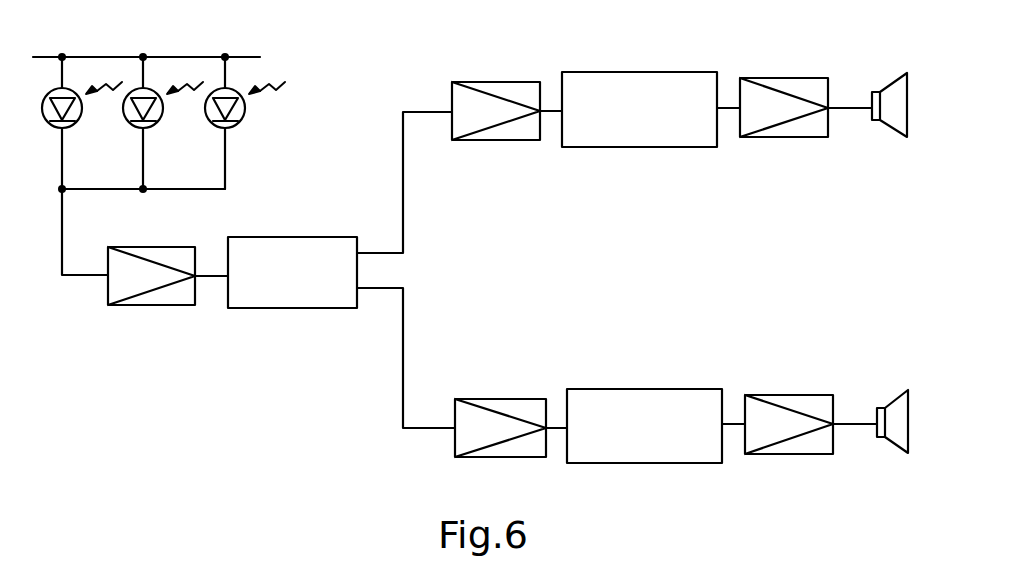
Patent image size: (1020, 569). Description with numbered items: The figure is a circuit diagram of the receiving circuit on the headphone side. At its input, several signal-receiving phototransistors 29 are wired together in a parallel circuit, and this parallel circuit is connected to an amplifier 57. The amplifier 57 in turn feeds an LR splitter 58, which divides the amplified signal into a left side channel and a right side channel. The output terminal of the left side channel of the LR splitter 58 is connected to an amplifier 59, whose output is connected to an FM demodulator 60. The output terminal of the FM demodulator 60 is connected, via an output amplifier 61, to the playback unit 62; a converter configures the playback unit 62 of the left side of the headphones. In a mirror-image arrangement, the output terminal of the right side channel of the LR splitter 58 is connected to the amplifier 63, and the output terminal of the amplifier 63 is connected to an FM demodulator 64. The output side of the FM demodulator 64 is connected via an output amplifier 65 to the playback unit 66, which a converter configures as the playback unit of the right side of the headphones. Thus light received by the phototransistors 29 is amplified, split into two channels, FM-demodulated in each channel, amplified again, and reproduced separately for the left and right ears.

The phototransistor 29 is at (83, 117).
The amplifier 57 is at (158, 305).
The LR splitter 58 is at (305, 308).
The amplifier 59 is at (498, 82).
The FM demodulator 60 is at (642, 72).
The output amplifier 61 is at (787, 78).
The playback unit 62 is at (893, 82).
The amplifier 63 is at (513, 399).
The FM demodulator 64 is at (650, 389).
The output amplifier 65 is at (797, 395).
The playback unit 66 is at (895, 400).